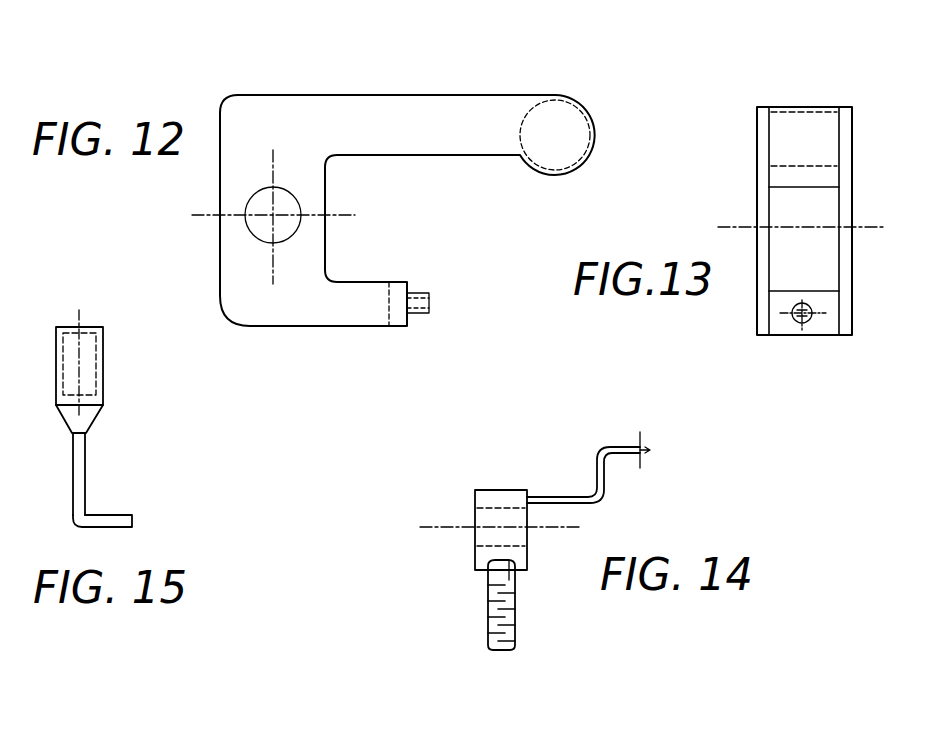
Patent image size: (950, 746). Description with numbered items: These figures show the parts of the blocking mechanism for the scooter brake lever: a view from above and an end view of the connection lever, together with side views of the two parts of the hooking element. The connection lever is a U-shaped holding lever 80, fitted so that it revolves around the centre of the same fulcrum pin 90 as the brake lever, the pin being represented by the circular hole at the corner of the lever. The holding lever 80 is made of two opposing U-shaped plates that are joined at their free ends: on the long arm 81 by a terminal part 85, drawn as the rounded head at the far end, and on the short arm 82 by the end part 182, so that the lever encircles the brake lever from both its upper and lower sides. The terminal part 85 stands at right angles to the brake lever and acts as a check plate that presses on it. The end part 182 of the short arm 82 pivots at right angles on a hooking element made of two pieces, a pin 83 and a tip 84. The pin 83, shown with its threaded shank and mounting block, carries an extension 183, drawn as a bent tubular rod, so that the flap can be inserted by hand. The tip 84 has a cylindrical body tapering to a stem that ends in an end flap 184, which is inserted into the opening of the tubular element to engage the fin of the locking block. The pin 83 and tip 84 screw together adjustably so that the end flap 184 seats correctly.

In FIG. 12, the holding lever 80 is at (235, 108).
In FIG. 13, the holding lever 80 is at (757, 187).
In FIG. 12, the long arm 81 is at (382, 115).
In FIG. 12, the short arm 82 is at (325, 317).
In FIG. 14, the pin 83 is at (495, 504).
In FIG. 15, the tip 84 is at (85, 361).
In FIG. 12, the terminal part 85 is at (553, 137).
In FIG. 13, the terminal part 85 is at (803, 130).
In FIG. 12, the fulcrum pin 90 is at (283, 208).
In FIG. 12, the end part 182 is at (389, 326).
In FIG. 13, the end part 182 is at (816, 325).
In FIG. 14, the extension 183 is at (560, 495).
In FIG. 15, the end flap 184 is at (106, 524).